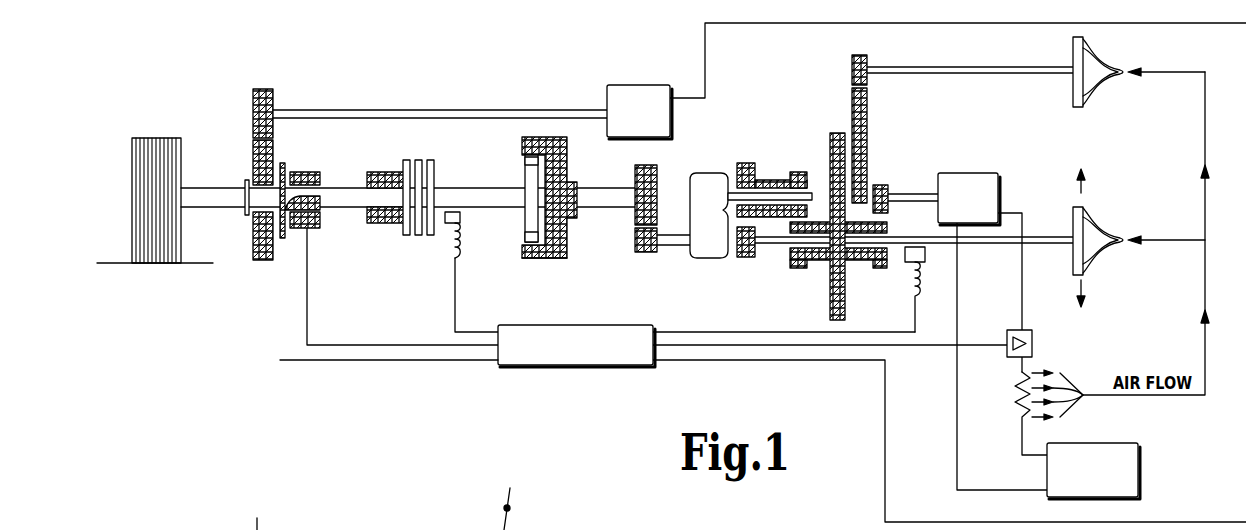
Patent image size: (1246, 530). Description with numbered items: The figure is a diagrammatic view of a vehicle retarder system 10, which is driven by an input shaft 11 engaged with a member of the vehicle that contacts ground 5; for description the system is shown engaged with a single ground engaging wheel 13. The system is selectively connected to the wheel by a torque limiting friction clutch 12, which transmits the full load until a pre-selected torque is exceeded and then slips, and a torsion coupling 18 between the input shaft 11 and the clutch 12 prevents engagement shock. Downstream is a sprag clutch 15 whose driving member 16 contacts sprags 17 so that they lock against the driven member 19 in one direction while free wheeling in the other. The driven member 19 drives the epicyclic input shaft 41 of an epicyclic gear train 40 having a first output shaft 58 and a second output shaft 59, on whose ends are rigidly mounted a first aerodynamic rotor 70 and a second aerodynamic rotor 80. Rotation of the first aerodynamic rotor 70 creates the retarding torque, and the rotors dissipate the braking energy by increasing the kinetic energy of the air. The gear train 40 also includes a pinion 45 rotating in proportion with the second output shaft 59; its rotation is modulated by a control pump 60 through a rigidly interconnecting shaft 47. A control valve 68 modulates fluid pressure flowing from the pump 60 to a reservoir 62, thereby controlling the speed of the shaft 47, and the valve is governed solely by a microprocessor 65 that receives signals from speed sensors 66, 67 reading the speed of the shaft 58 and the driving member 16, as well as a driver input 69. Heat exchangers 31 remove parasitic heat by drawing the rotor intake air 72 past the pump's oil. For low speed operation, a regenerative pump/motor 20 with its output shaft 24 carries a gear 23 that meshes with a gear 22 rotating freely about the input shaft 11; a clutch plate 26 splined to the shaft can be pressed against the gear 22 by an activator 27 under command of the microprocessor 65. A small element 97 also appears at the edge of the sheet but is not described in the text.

The ground 5 is at (115, 261).
The retarder system 10 is at (420, 397).
The input shaft 11 is at (210, 195).
The torque limiting friction clutch 12 is at (426, 146).
The wheel 13 is at (175, 137).
The sprag clutch 15 is at (510, 166).
The driving member 16 is at (524, 222).
The sprags 17 is at (527, 243).
The torsion coupling 18 is at (393, 224).
The driven member 19 is at (548, 257).
The regenerative pump/motor 20 is at (668, 86).
The gear 22 is at (253, 239).
The gear 23 is at (252, 104).
The output shaft 24 is at (394, 108).
The clutch plate 26 is at (286, 240).
The activator 27 is at (320, 224).
The heat exchangers 31 is at (1048, 359).
The epicyclic gear train 40 is at (817, 284).
The epicyclic input shaft 41 is at (622, 187).
The pinion 45 is at (887, 185).
The interconnecting shaft 47 is at (919, 192).
The first output shaft 58 is at (1063, 234).
The second output shaft 59 is at (1017, 65).
The control pump 60 is at (998, 176).
The reservoir 62 is at (1139, 470).
The microprocessor 65 is at (598, 367).
The speed sensor 66 is at (924, 259).
The speed sensor 67 is at (447, 224).
The control valve 68 is at (1032, 332).
The driver input 69 is at (315, 365).
The first aerodynamic rotor 70 is at (1106, 254).
The rotor intake air 72 is at (1194, 397).
The second aerodynamic rotor 80 is at (1108, 85).
The pendulum 97 is at (504, 507).